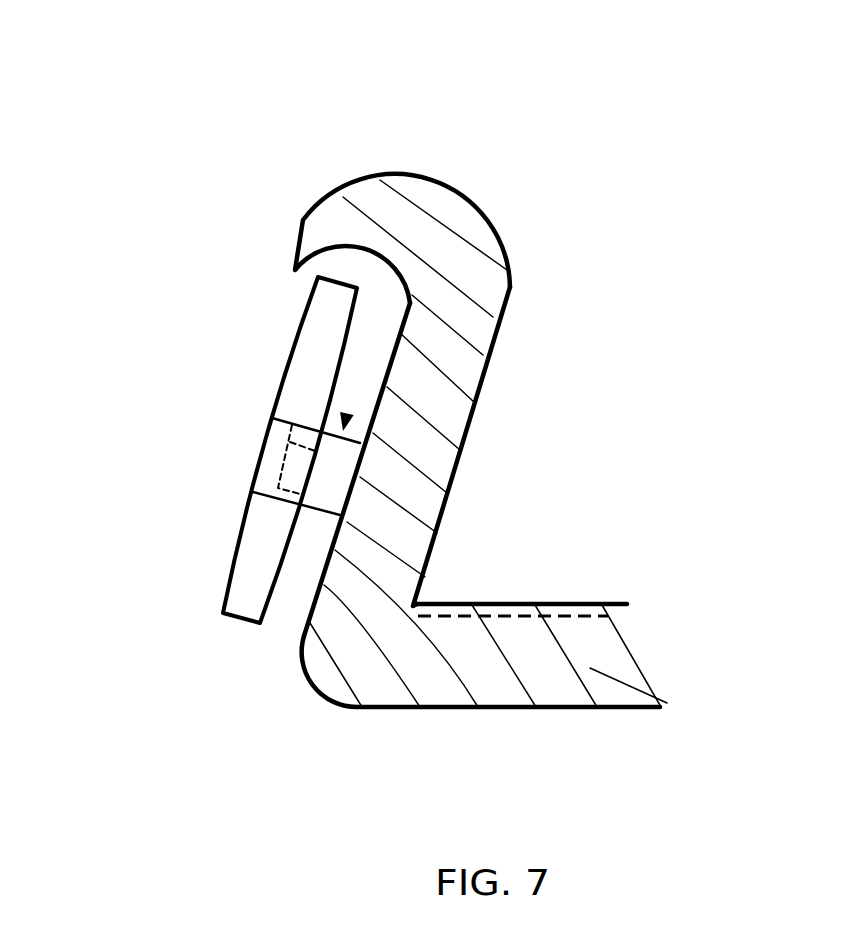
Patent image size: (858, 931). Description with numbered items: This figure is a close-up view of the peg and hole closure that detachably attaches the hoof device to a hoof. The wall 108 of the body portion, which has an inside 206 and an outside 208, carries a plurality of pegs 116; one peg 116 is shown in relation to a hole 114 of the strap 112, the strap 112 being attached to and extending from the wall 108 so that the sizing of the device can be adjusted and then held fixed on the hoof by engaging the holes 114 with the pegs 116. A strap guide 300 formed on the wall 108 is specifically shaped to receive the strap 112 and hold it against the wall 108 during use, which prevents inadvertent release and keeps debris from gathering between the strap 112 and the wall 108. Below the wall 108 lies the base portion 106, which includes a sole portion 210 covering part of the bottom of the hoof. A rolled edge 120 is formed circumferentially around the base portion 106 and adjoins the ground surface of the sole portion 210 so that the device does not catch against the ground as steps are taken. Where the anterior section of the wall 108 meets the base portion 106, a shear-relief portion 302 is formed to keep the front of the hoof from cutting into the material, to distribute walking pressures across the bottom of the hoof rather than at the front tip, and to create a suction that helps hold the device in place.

The strap guide 300 is at (345, 238).
The wall 108 is at (483, 282).
The inside 206 is at (487, 367).
The outside 208 is at (310, 610).
The rolled edge 120 is at (318, 688).
The base portion 106 is at (580, 640).
The shear-relief portion 302 is at (453, 605).
The sole portion 210 is at (570, 618).
The strap 112 is at (295, 398).
The holes 114 is at (270, 461).
The pegs 116 is at (346, 416).